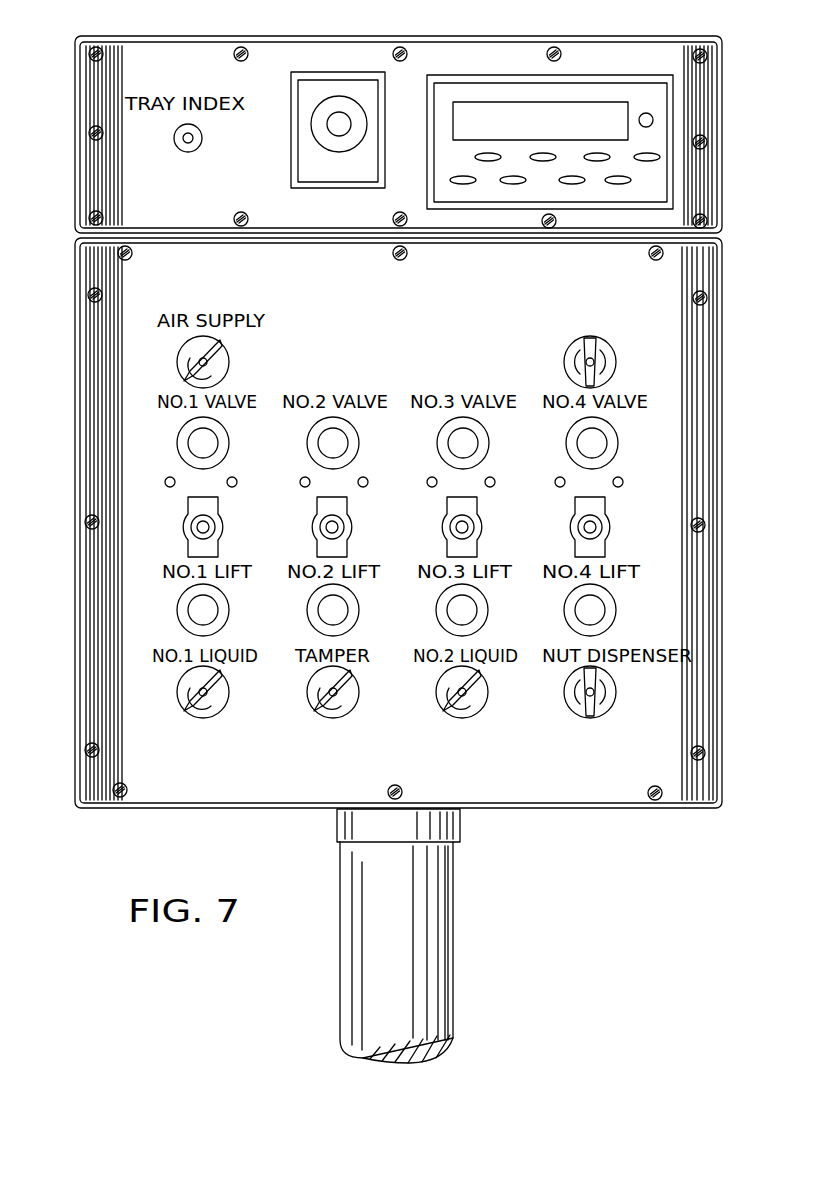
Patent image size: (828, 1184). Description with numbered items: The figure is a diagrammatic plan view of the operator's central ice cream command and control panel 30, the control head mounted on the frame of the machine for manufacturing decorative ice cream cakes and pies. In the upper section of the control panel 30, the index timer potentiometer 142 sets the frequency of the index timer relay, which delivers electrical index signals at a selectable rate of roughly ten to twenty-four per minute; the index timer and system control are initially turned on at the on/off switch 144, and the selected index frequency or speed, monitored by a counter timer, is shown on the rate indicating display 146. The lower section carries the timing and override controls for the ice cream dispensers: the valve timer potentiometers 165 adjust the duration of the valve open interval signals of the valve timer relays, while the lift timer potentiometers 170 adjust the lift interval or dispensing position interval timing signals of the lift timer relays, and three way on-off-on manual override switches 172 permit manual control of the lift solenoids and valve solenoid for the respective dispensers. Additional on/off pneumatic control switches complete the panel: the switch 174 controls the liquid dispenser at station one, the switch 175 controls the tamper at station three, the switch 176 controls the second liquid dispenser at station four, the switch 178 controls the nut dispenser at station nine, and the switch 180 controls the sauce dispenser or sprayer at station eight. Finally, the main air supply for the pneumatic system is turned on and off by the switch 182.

The control panel 30 is at (510, 36).
The index timer potentiometer 142 is at (342, 96).
The on/off switch 144 is at (203, 137).
The rate indicating display 146 is at (588, 108).
The valve timer potentiometers 165 is at (307, 440).
The lift timer potentiometers 170 is at (229, 610).
The three way on-off-on manual override switches 172 is at (312, 527).
The on/off pneumatic control switch 174 is at (213, 717).
The on/off switch 175 is at (341, 717).
The on/off switch 176 is at (470, 717).
The on/off switch 178 is at (598, 717).
The on/off switch 180 is at (565, 356).
The main air supply switch 182 is at (229, 361).